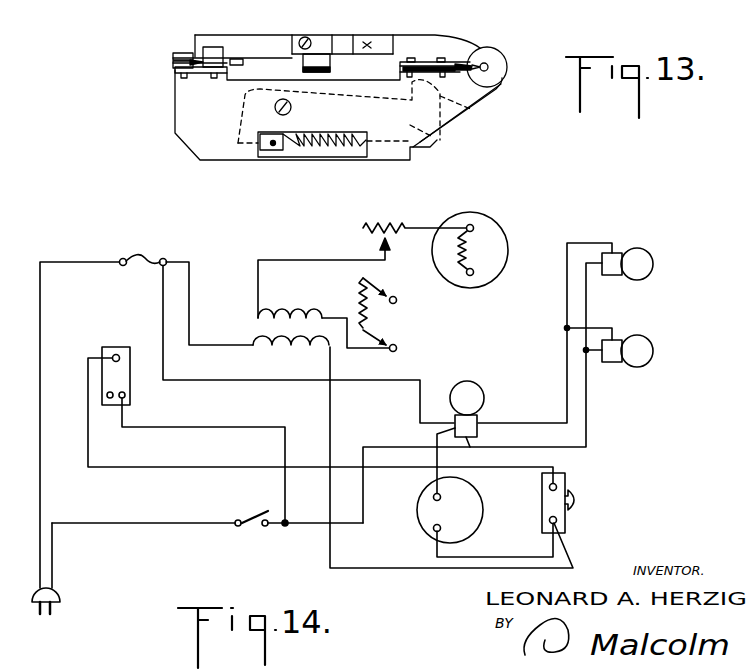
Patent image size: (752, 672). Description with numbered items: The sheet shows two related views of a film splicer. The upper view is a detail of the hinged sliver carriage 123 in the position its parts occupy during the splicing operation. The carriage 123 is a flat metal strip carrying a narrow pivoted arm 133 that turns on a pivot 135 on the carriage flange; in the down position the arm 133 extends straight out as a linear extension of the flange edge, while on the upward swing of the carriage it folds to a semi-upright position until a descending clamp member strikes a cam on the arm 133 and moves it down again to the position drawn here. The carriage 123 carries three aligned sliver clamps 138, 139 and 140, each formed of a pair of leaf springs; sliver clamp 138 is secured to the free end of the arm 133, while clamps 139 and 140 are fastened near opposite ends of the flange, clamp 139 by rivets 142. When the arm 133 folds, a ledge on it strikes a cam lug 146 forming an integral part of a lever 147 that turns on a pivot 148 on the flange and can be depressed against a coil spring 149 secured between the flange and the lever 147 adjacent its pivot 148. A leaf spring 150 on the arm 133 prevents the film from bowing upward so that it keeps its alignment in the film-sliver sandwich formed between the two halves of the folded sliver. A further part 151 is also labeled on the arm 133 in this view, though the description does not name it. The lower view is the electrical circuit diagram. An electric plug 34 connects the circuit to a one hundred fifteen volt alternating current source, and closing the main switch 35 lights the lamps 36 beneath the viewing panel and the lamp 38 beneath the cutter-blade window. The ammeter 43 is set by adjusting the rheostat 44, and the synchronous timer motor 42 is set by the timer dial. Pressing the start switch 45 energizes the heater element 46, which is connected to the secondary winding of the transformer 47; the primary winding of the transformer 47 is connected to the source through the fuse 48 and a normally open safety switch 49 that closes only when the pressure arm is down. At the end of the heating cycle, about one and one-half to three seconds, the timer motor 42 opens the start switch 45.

In FIG. 13, the hinged sliver carriage 123 is at (197, 133).
In FIG. 13, the pivoted arm 133 is at (225, 35).
In FIG. 13, the pivot 135 is at (497, 60).
In FIG. 13, the sliver clamp 138 is at (176, 60).
In FIG. 13, the sliver clamp 139 is at (458, 60).
In FIG. 13, the sliver clamp 140 is at (176, 68).
In FIG. 13, the rivets 142 is at (440, 57).
In FIG. 13, the cam lug 146 is at (472, 107).
In FIG. 13, the lever 147 is at (438, 143).
In FIG. 13, the pivot 148 is at (274, 107).
In FIG. 13, the coil spring 149 is at (338, 146).
In FIG. 13, the leaf spring 150 is at (318, 62).
In FIG. 13, the screw terminal 151 is at (304, 37).
In FIG. 14, the electric plug 34 is at (60, 595).
In FIG. 14, the main switch 35 is at (249, 528).
In FIG. 14, the lamps 36 is at (645, 265).
In FIG. 14, the lamp 38 is at (470, 388).
In FIG. 14, the synchronous timer motor 42 is at (418, 530).
In FIG. 14, the ammeter 43 is at (492, 234).
In FIG. 14, the rheostat 44 is at (387, 218).
In FIG. 14, the start switch 45 is at (581, 500).
In FIG. 14, the heater element 46 is at (360, 290).
In FIG. 14, the transformer 47 is at (259, 328).
In FIG. 14, the fuse 48 is at (147, 254).
In FIG. 14, the safety switch 49 is at (118, 344).